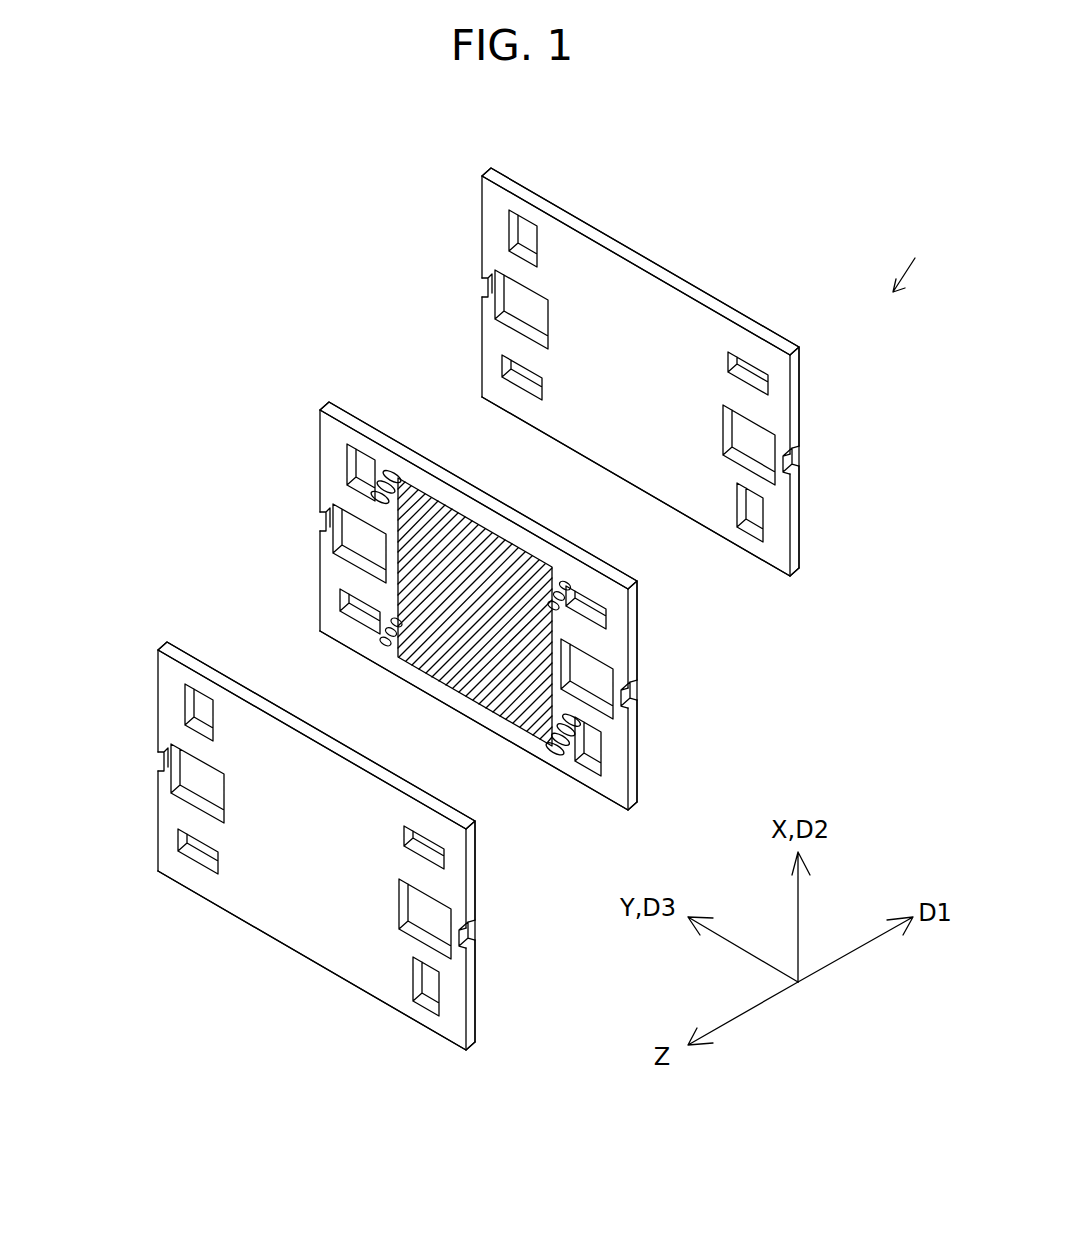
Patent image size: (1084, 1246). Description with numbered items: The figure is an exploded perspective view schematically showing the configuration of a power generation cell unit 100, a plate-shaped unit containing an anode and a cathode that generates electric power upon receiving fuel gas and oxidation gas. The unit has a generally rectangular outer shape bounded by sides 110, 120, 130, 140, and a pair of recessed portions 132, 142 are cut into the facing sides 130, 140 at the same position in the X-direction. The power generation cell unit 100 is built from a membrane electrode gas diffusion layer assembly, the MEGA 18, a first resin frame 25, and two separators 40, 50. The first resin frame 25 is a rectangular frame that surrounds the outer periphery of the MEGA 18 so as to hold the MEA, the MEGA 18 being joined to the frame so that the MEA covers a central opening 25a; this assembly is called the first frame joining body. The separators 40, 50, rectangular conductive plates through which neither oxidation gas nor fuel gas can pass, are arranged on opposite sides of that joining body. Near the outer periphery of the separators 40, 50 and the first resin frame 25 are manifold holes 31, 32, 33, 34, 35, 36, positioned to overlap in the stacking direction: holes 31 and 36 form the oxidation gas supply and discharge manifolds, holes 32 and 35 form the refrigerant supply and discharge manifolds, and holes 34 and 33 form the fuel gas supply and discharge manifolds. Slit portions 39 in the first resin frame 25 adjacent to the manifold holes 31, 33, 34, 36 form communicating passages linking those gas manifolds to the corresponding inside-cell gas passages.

The power generation cell unit 100 is at (923, 255).
The separator 40 is at (668, 272).
The first resin frame 25 is at (635, 790).
The separator 50 is at (243, 920).
The membrane electrode gas diffusion layer assembly (MEGA) 18 is at (446, 668).
The opening 25a is at (410, 490).
The manifold holes 31 is at (509, 230).
The manifold holes 32 is at (495, 312).
The manifold holes 33 is at (502, 366).
The manifold holes 34 is at (768, 382).
The manifold holes 35 is at (775, 445).
The manifold holes 36 is at (763, 520).
The slit portions 39 is at (382, 468).
The side 110 is at (649, 496).
The side 120 is at (718, 308).
The side 130 is at (799, 490).
The recessed portion 132 is at (792, 462).
The side 140 is at (482, 184).
The recessed portion 142 is at (482, 288).